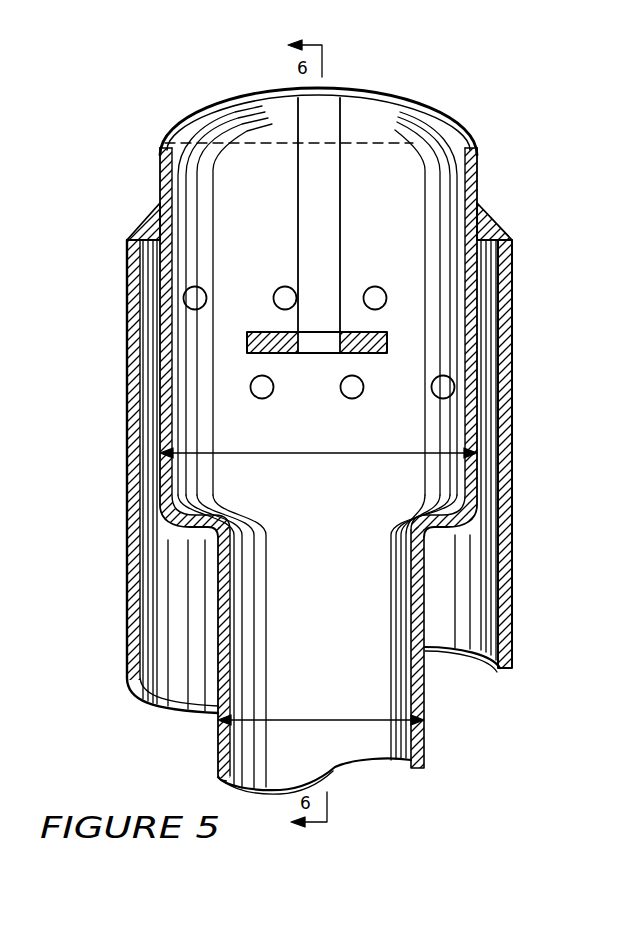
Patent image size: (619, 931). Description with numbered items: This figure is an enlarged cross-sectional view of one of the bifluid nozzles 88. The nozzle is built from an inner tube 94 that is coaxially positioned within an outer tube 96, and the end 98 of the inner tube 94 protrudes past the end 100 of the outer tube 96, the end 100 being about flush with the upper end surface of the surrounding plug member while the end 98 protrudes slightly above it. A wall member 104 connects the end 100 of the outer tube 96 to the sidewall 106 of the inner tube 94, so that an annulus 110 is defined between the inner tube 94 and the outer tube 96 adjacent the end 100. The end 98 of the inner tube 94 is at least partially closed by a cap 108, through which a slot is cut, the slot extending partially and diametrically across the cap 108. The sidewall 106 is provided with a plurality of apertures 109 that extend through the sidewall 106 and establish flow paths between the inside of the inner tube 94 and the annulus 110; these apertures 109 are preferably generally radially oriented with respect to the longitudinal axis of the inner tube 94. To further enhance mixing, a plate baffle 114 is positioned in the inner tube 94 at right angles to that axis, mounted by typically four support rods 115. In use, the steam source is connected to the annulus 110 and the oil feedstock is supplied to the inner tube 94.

The bifluid nozzle 88 is at (160, 148).
The inner tube 94 is at (426, 582).
The outer tube 96 is at (514, 600).
The end of the inner tube 98 is at (405, 98).
The end of the outer tube 100 is at (124, 236).
The wall member 104 is at (500, 218).
The sidewall of the inner tube 106 is at (481, 167).
The cap 108 is at (218, 104).
The apertures 109 is at (174, 384).
The annulus 110 is at (148, 462).
The plate baffle 114 is at (388, 340).
The support rods 115 is at (341, 240).